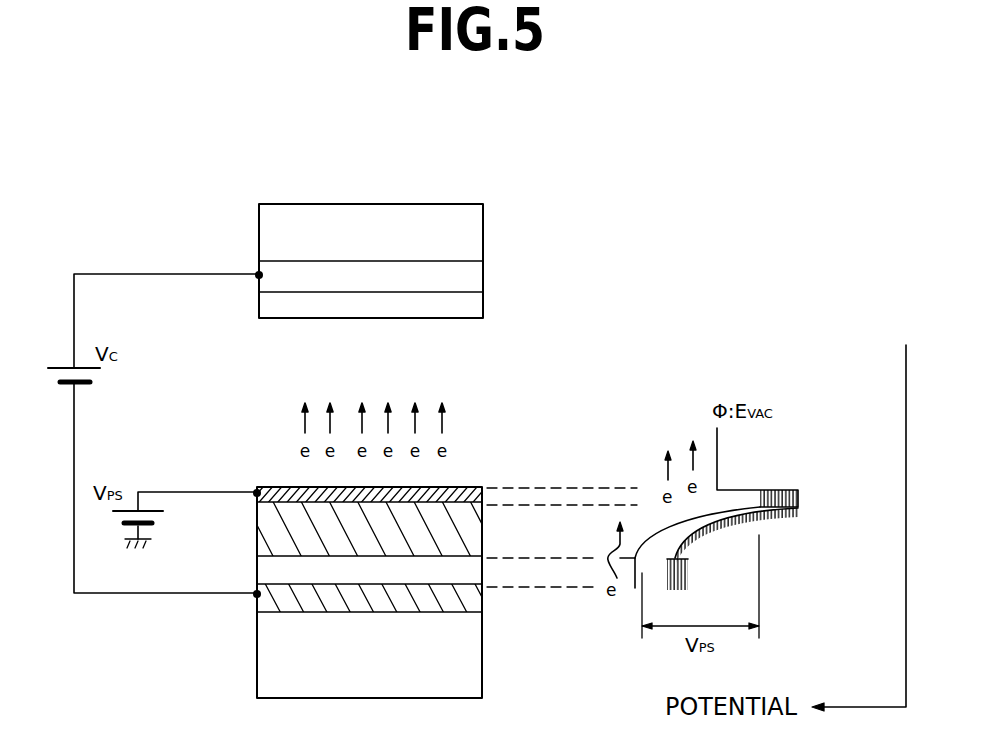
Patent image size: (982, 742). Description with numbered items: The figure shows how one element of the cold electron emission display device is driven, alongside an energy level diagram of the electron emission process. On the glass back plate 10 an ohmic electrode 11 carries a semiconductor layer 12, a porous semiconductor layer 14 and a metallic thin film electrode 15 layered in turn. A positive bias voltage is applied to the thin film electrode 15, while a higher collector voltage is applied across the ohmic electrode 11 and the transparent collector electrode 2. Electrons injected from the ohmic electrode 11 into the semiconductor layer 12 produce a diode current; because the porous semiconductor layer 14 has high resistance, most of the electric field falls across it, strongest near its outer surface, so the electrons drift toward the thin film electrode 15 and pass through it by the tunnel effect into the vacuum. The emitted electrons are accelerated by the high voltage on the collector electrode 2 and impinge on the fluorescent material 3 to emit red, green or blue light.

The transparent collector electrode 2 is at (480, 272).
The fluorescent material 3 is at (478, 310).
The back plate 10 is at (257, 652).
The ohmic electrodes 11 is at (256, 604).
The semiconductor layer 12 is at (258, 568).
The porous semiconductor layer 14 is at (258, 528).
The metallic thin film electrode 15 is at (257, 489).